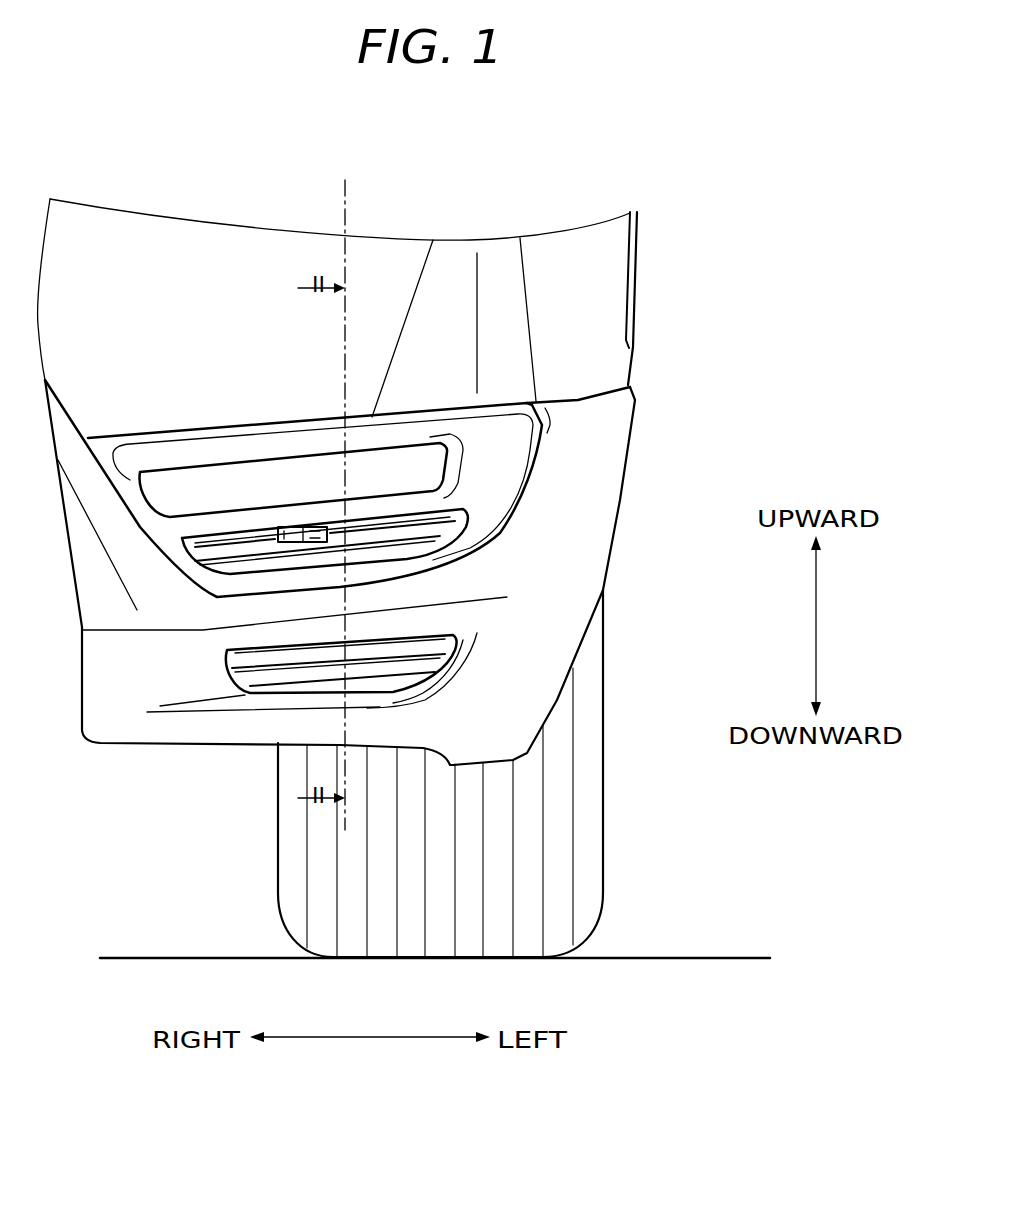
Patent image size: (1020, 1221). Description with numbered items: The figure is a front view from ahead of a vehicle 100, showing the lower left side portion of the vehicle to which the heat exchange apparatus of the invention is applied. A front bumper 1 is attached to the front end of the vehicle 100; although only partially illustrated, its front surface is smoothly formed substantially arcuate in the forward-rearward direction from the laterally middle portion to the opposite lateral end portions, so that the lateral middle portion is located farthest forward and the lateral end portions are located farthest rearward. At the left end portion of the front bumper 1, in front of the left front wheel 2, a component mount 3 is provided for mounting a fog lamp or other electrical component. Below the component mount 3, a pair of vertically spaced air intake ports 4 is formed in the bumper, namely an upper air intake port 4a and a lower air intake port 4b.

The vehicle 100 is at (558, 518).
The front bumper 1 is at (587, 565).
The left front wheel 2 is at (603, 830).
The component mount 3 is at (497, 467).
The air intake ports 4 is at (274, 661).
The upper air intake port 4a is at (227, 563).
The lower air intake port 4b is at (258, 677).